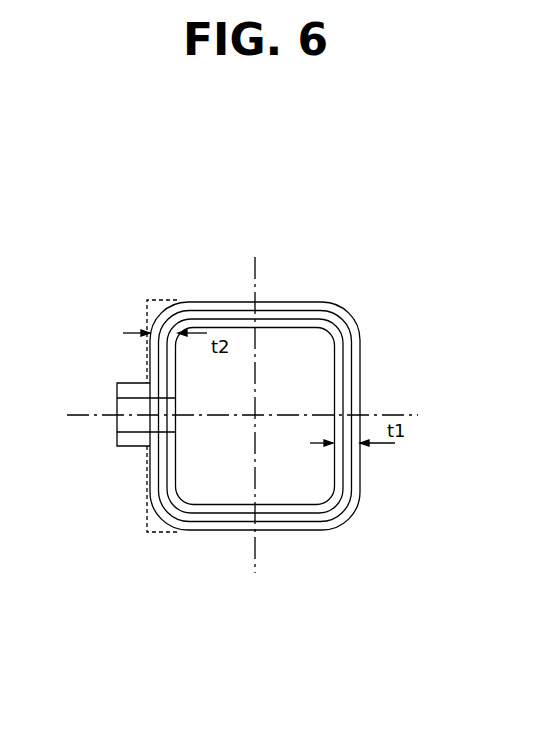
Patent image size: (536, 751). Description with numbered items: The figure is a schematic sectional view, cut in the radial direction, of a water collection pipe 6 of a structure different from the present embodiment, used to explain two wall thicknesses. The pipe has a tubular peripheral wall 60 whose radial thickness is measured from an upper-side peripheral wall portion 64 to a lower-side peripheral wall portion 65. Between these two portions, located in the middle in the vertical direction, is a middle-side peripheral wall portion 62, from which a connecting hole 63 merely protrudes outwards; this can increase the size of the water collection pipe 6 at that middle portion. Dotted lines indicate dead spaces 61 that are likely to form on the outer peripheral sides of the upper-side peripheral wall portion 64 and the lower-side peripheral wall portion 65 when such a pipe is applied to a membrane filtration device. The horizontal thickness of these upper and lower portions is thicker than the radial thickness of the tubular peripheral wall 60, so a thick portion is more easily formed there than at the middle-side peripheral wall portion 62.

The water collection pipe 6 is at (242, 393).
The tubular peripheral wall 60 is at (312, 314).
The dead spaces 61 is at (150, 300).
The middle-side peripheral wall portion 62 is at (132, 383).
The connecting hole 63 is at (128, 433).
The upper-side peripheral wall portion 64 is at (275, 306).
The lower-side peripheral wall portion 65 is at (263, 523).